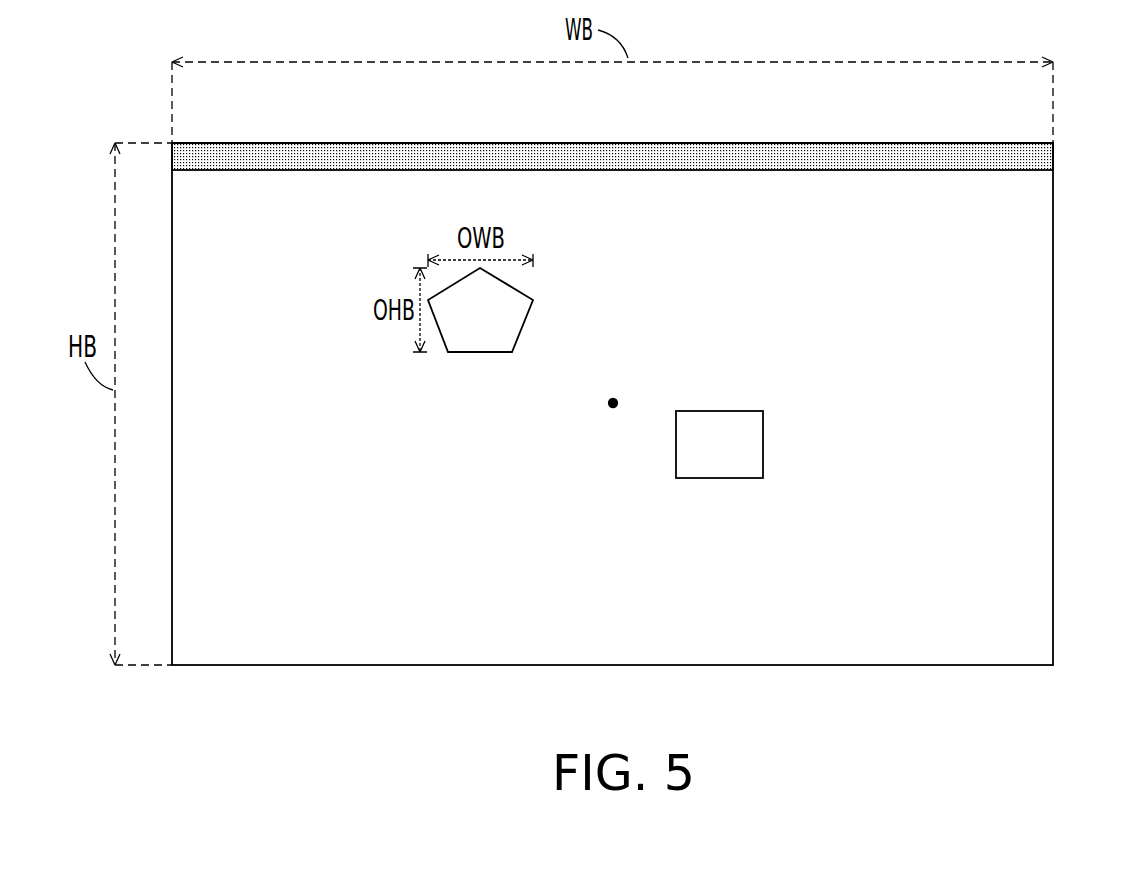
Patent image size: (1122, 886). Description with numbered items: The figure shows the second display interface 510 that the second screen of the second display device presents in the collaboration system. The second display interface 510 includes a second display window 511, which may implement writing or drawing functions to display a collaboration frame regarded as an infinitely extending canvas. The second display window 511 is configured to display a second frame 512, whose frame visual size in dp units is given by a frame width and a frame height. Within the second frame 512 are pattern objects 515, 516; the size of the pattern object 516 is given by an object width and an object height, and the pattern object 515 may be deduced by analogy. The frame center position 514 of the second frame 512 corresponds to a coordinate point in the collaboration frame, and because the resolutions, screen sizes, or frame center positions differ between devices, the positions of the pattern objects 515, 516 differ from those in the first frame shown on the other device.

The second display interface 510 is at (1053, 415).
The second display window 511 is at (897, 142).
The second frame 512 is at (720, 203).
The frame center position 514 is at (607, 403).
The pattern object 515 is at (720, 410).
The pattern object 516 is at (525, 327).